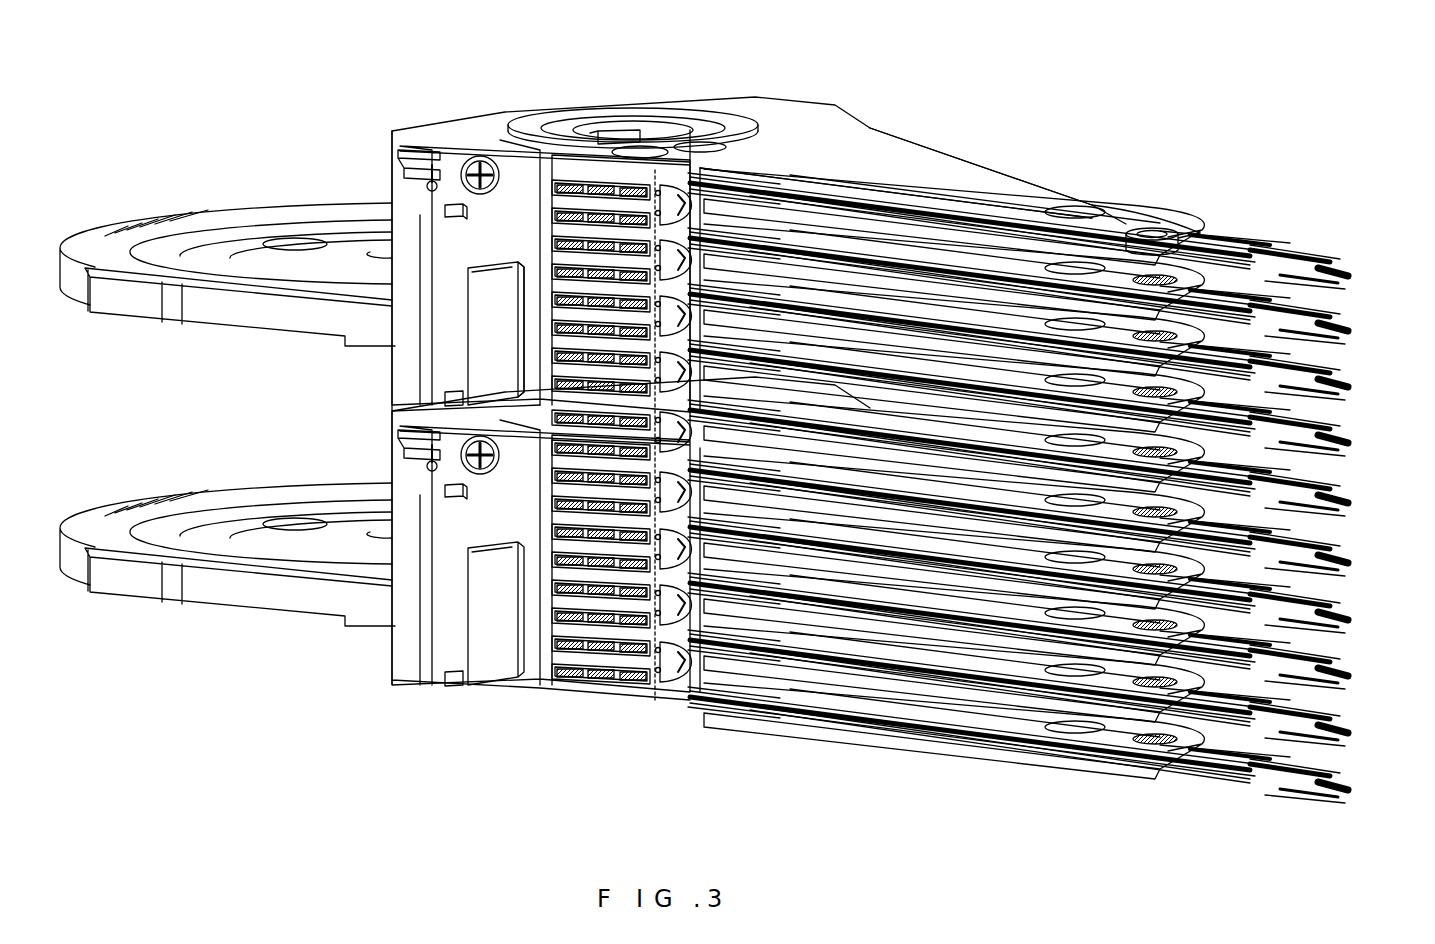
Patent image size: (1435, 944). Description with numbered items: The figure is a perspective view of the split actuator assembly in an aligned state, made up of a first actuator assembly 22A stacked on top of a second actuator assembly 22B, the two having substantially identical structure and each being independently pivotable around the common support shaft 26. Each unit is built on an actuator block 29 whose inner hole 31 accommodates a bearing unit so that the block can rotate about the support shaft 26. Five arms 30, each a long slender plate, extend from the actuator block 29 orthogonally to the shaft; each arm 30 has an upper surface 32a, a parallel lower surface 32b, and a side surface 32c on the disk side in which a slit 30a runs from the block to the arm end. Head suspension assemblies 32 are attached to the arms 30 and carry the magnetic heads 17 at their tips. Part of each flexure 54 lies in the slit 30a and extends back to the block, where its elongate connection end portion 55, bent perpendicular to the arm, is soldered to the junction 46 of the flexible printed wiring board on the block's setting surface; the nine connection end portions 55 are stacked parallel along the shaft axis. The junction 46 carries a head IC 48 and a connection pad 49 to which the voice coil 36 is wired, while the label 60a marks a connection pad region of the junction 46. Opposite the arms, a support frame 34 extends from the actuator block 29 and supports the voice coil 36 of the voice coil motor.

The magnetic head 17 is at (1348, 278).
The first actuator assembly 22A is at (872, 118).
The second actuator assembly 22B is at (664, 740).
The support shaft 26 is at (634, 125).
The actuator block 29 is at (518, 125).
The arm 30 is at (935, 240).
The slit 30a is at (996, 262).
The inner hole 31 is at (652, 140).
The head suspension assembly 32 is at (1285, 166).
The upper surface 32a is at (878, 150).
The lower surface 32b is at (790, 200).
The side surface 32c is at (818, 200).
The support frame 34 is at (205, 320).
The voice coil 36 is at (262, 220).
The junction 46 is at (530, 178).
The head IC 48 is at (488, 292).
The connection pad 49 is at (432, 162).
The flexure 54 is at (1226, 345).
The connection end portion 55 is at (543, 209).
The end portion of flexure 60a is at (540, 378).